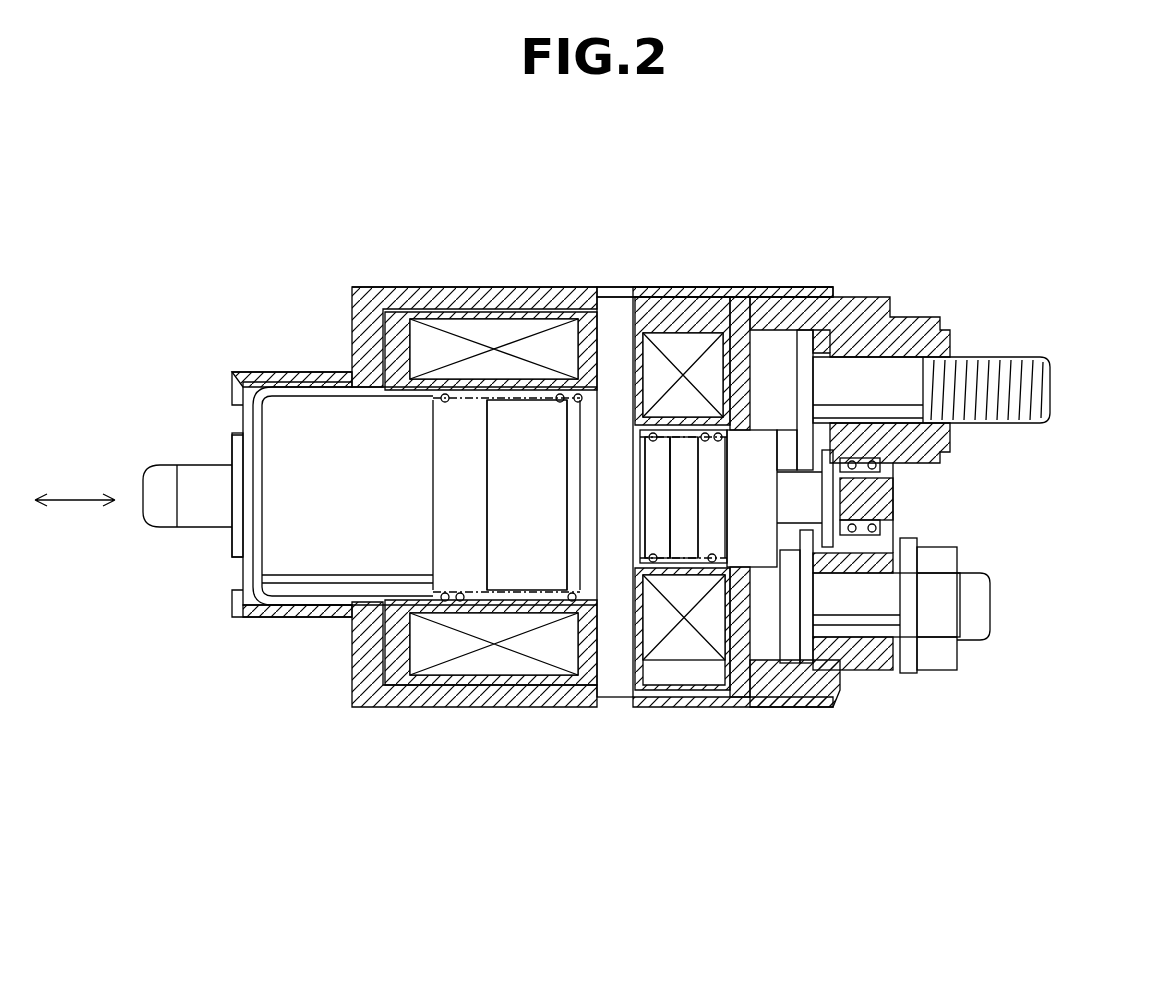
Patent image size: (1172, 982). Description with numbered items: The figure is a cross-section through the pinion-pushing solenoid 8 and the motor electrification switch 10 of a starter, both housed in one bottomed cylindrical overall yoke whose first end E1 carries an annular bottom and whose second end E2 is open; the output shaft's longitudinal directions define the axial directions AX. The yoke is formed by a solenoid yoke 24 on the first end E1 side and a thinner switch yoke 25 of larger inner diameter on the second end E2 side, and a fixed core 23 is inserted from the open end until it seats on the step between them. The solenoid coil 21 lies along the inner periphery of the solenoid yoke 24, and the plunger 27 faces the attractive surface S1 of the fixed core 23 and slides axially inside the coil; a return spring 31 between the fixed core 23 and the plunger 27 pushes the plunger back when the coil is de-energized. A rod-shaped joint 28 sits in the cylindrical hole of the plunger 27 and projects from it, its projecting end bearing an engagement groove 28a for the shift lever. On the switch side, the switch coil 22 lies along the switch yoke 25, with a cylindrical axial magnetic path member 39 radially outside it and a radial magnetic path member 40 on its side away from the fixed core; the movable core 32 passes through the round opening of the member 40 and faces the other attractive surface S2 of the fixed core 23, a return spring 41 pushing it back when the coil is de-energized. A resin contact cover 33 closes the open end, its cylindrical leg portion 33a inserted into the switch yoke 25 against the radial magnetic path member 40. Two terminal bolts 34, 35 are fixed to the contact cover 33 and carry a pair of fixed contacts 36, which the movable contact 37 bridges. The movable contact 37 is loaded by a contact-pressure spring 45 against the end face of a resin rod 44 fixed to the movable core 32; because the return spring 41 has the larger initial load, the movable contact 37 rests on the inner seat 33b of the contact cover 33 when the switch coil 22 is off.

The axial directions AX is at (75, 485).
The pinion-pushing solenoid 8 is at (378, 275).
The motor electrification switch 10 is at (737, 279).
The first end E1 is at (350, 312).
The second end E2 is at (833, 345).
The solenoid coil 21 is at (489, 332).
The switch coil 22 is at (680, 355).
The fixed core 23 is at (610, 325).
The solenoid yoke 24 is at (433, 300).
The switch yoke 25 is at (706, 297).
The plunger 27 is at (298, 432).
The joint 28 is at (162, 513).
The engagement groove 28a is at (208, 512).
The return spring 31 is at (453, 602).
The movable core 32 is at (764, 430).
The contact cover 33 is at (885, 300).
The leg portion 33a is at (792, 690).
The inner seat 33b is at (893, 510).
The terminal bolt 34 is at (1030, 380).
The terminal bolt 35 is at (976, 607).
The fixed contacts 36 is at (814, 438).
The movable contact 37 is at (898, 483).
The axial magnetic path member 39 is at (694, 690).
The radial magnetic path member 40 is at (738, 690).
The return spring 41 is at (648, 515).
The resin rod 44 is at (830, 428).
The contact-pressure spring 45 is at (878, 530).
The attractive surface S1 is at (588, 548).
The attractive surface S2 is at (695, 520).